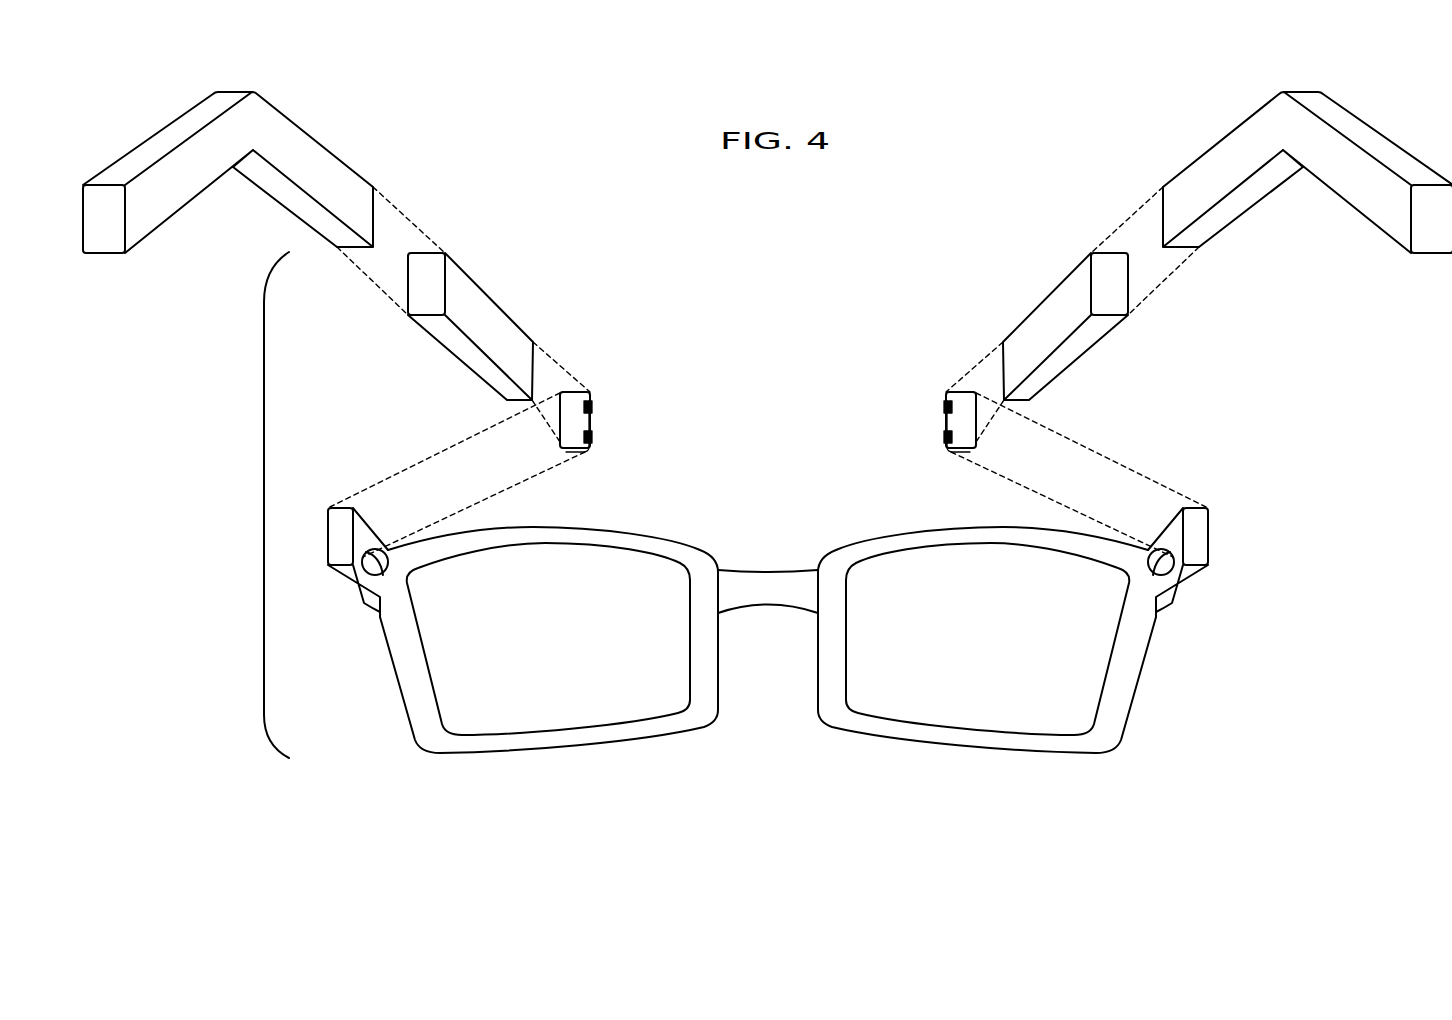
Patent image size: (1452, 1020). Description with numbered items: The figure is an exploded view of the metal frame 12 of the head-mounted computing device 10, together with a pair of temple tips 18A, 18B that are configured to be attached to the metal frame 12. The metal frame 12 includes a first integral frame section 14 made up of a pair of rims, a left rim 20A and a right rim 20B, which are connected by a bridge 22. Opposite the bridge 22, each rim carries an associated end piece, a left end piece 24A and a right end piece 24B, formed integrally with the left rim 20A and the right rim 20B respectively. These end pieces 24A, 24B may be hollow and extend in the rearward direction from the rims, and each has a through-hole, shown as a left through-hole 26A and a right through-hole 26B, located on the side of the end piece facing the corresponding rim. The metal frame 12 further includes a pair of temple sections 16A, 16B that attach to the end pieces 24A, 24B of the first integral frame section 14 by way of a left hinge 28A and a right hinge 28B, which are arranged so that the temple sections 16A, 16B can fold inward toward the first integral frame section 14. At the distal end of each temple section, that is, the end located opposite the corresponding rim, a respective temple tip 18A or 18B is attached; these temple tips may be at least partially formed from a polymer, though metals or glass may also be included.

The head-mounted computing device 10 is at (246, 812).
The metal frame 12 is at (264, 504).
The first integral frame section 14 is at (658, 520).
The left temple section 16A is at (497, 303).
The right temple section 16B is at (1039, 303).
The left temple tip 18A is at (173, 121).
The right temple tip 18B is at (1363, 121).
The left rim 20A is at (568, 750).
The right rim 20B is at (968, 750).
The bridge 22 is at (768, 570).
The left end piece 24A is at (327, 538).
The right end piece 24B is at (1209, 538).
The left through-hole 26A is at (362, 571).
The right through-hole 26B is at (1174, 571).
The left hinge 28A is at (591, 423).
The right hinge 28B is at (945, 423).